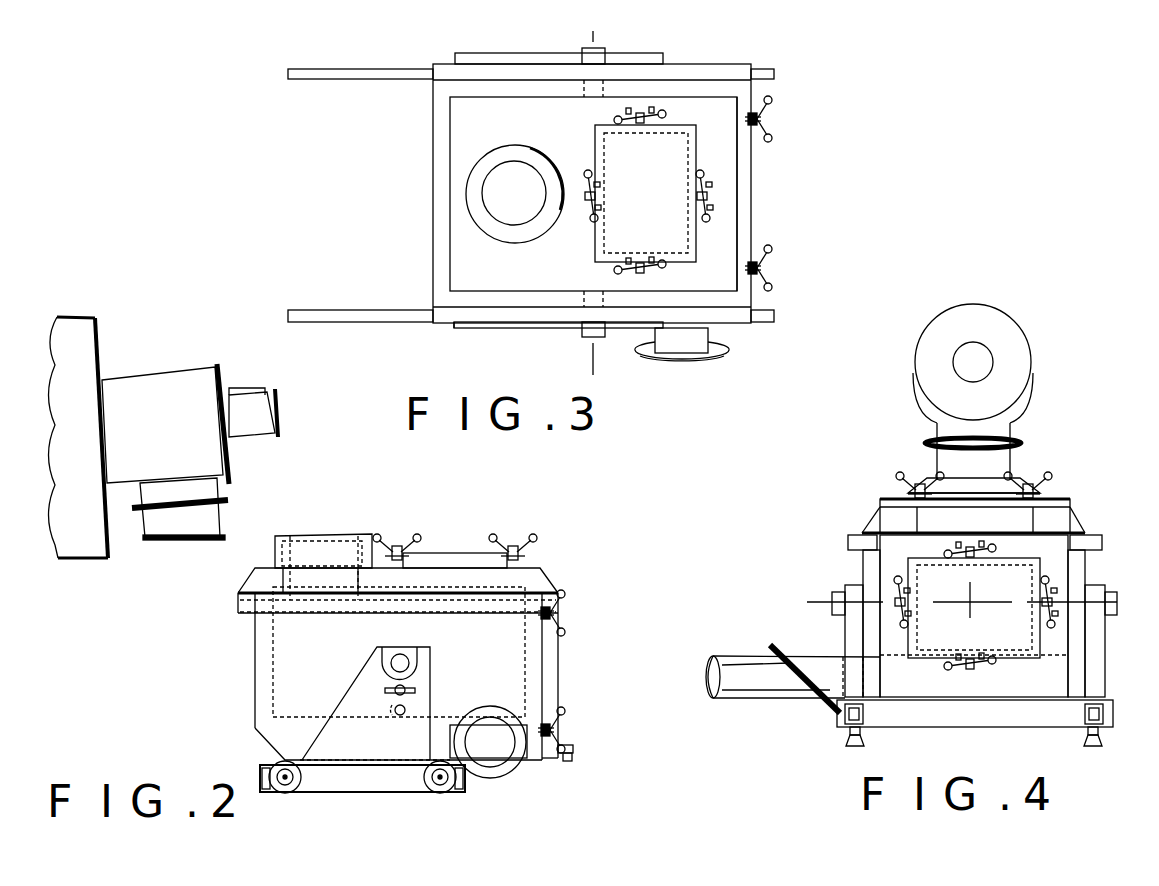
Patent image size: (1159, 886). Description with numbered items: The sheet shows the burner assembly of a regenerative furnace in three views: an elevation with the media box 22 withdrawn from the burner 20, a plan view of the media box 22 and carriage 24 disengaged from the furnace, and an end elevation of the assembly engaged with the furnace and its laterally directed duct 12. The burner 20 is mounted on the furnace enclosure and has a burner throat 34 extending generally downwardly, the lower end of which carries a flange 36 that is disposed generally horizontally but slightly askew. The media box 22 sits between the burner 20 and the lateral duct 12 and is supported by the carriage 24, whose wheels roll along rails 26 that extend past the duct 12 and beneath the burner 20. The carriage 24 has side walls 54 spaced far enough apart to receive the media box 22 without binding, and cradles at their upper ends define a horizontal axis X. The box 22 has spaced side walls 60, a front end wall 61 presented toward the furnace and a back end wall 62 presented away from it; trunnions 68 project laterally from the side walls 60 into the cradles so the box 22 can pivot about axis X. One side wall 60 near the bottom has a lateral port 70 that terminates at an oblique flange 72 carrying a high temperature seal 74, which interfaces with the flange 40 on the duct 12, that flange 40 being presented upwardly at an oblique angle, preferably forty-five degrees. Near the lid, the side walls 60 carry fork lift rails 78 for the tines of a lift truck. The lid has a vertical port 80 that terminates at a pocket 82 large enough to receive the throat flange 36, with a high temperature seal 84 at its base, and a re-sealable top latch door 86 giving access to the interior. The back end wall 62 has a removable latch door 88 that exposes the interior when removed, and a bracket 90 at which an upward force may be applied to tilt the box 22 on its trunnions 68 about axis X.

In FIG. 4, the lateral duct 12 is at (752, 692).
In FIG. 2, the burner 20 is at (174, 372).
In FIG. 4, the burner 20 is at (1034, 316).
In FIG. 3, the media box 22 is at (428, 173).
In FIG. 2, the media box 22 is at (473, 540).
In FIG. 4, the media box 22 is at (867, 512).
In FIG. 2, the carriage 24 is at (357, 792).
In FIG. 3, the rails 26 is at (327, 310).
In FIG. 2, the burner throat 34 is at (165, 520).
In FIG. 4, the burner throat 34 is at (947, 460).
In FIG. 2, the flange 36 is at (225, 535).
In FIG. 4, the flange 40 is at (805, 692).
In FIG. 4, the side walls 54 is at (1105, 645).
In FIG. 3, the side walls 60 is at (462, 322).
In FIG. 4, the side walls 60 is at (862, 572).
In FIG. 3, the front end wall 61 is at (433, 218).
In FIG. 2, the front end wall 61 is at (252, 670).
In FIG. 3, the back end wall 62 is at (737, 100).
In FIG. 3, the trunnions 68 is at (598, 53).
In FIG. 3, the port 70 is at (700, 332).
In FIG. 4, the port 70 is at (830, 663).
In FIG. 3, the flange 72 is at (642, 353).
In FIG. 4, the flange 72 is at (805, 650).
In FIG. 4, the high temperature seal 74 is at (705, 670).
In FIG. 2, the fork lift rails 78 is at (527, 602).
In FIG. 4, the fork lift rails 78 is at (848, 540).
In FIG. 2, the vertical port 80 is at (276, 557).
In FIG. 4, the vertical port 80 is at (997, 480).
In FIG. 3, the pocket 82 is at (495, 208).
In FIG. 2, the pocket 82 is at (298, 535).
In FIG. 3, the high temperature seal 84 is at (485, 170).
In FIG. 2, the high temperature seal 84 is at (335, 543).
In FIG. 3, the top latch door 86 is at (660, 222).
In FIG. 2, the top latch door 86 is at (453, 563).
In FIG. 4, the top latch door 86 is at (976, 605).
In FIG. 3, the latch door 88 is at (745, 177).
In FIG. 2, the latch door 88 is at (547, 653).
In FIG. 2, the bracket 90 is at (570, 753).
In FIG. 4, the bracket 90 is at (1012, 707).